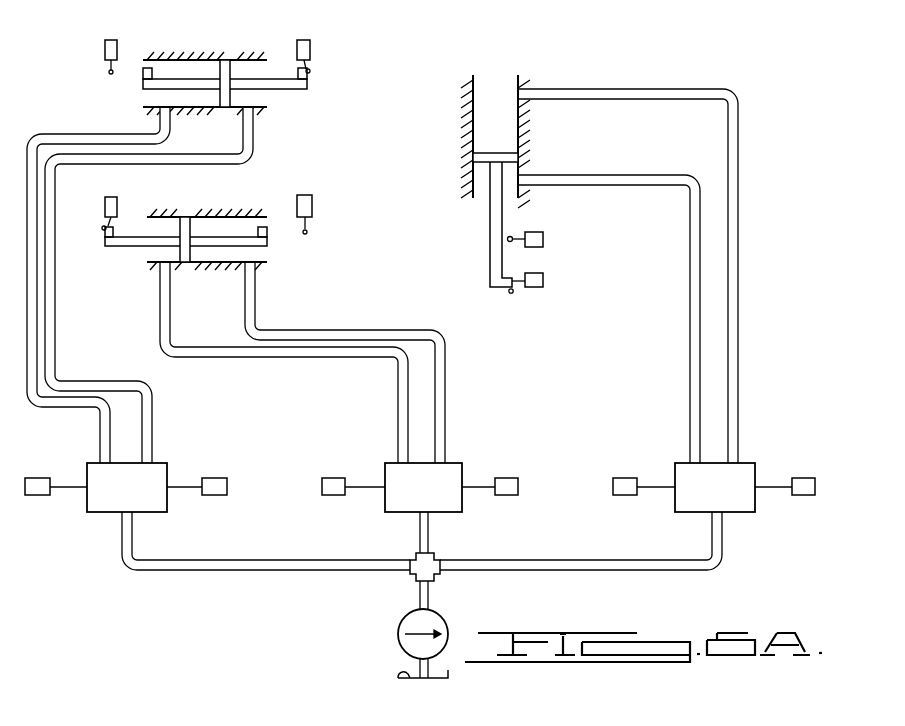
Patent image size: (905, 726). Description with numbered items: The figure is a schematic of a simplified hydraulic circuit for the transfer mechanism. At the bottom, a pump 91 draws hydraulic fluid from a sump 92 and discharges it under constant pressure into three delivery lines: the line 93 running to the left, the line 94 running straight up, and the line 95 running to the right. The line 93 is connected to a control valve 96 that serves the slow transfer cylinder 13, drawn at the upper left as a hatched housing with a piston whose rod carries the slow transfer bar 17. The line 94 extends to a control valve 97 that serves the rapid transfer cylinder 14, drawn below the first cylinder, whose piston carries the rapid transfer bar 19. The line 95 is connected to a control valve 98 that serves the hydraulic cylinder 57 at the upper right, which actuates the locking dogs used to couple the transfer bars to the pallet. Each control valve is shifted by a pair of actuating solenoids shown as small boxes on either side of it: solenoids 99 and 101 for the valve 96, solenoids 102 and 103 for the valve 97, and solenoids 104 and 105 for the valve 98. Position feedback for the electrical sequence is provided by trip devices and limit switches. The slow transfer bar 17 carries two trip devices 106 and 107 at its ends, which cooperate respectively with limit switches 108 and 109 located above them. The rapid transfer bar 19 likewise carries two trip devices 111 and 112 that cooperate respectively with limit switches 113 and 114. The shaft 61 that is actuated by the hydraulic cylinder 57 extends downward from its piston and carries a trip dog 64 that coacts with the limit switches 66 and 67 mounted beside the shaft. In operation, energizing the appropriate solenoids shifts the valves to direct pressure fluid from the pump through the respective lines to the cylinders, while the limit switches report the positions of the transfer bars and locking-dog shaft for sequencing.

The slow transfer cylinder 13 is at (228, 36).
The rapid transfer cylinder 14 is at (215, 215).
The slow transfer bar 17 is at (272, 90).
The rapid transfer bar 19 is at (250, 247).
The hydraulic cylinder 57 is at (520, 130).
The shaft 61 is at (490, 245).
The trip dog 64 is at (510, 294).
The limit switch 66 is at (543, 238).
The limit switch 67 is at (543, 280).
The pump 91 is at (442, 618).
The sump 92 is at (398, 678).
The delivery line 93 is at (118, 548).
The delivery line 94 is at (412, 562).
The delivery line 95 is at (712, 543).
The control valve 96 is at (143, 478).
The control valve 97 is at (452, 512).
The control valve 98 is at (742, 500).
The actuating solenoid 99 is at (50, 455).
The actuating solenoid 101 is at (227, 487).
The actuating solenoid 102 is at (335, 495).
The actuating solenoid 103 is at (512, 485).
The actuating solenoid 104 is at (625, 495).
The actuating solenoid 105 is at (803, 495).
The trip device 106 is at (143, 72).
The trip device 107 is at (293, 72).
The limit switch 108 is at (103, 50).
The limit switch 109 is at (310, 50).
The trip device 111 is at (105, 232).
The trip device 112 is at (267, 232).
The limit switch 113 is at (105, 205).
The limit switch 114 is at (312, 205).